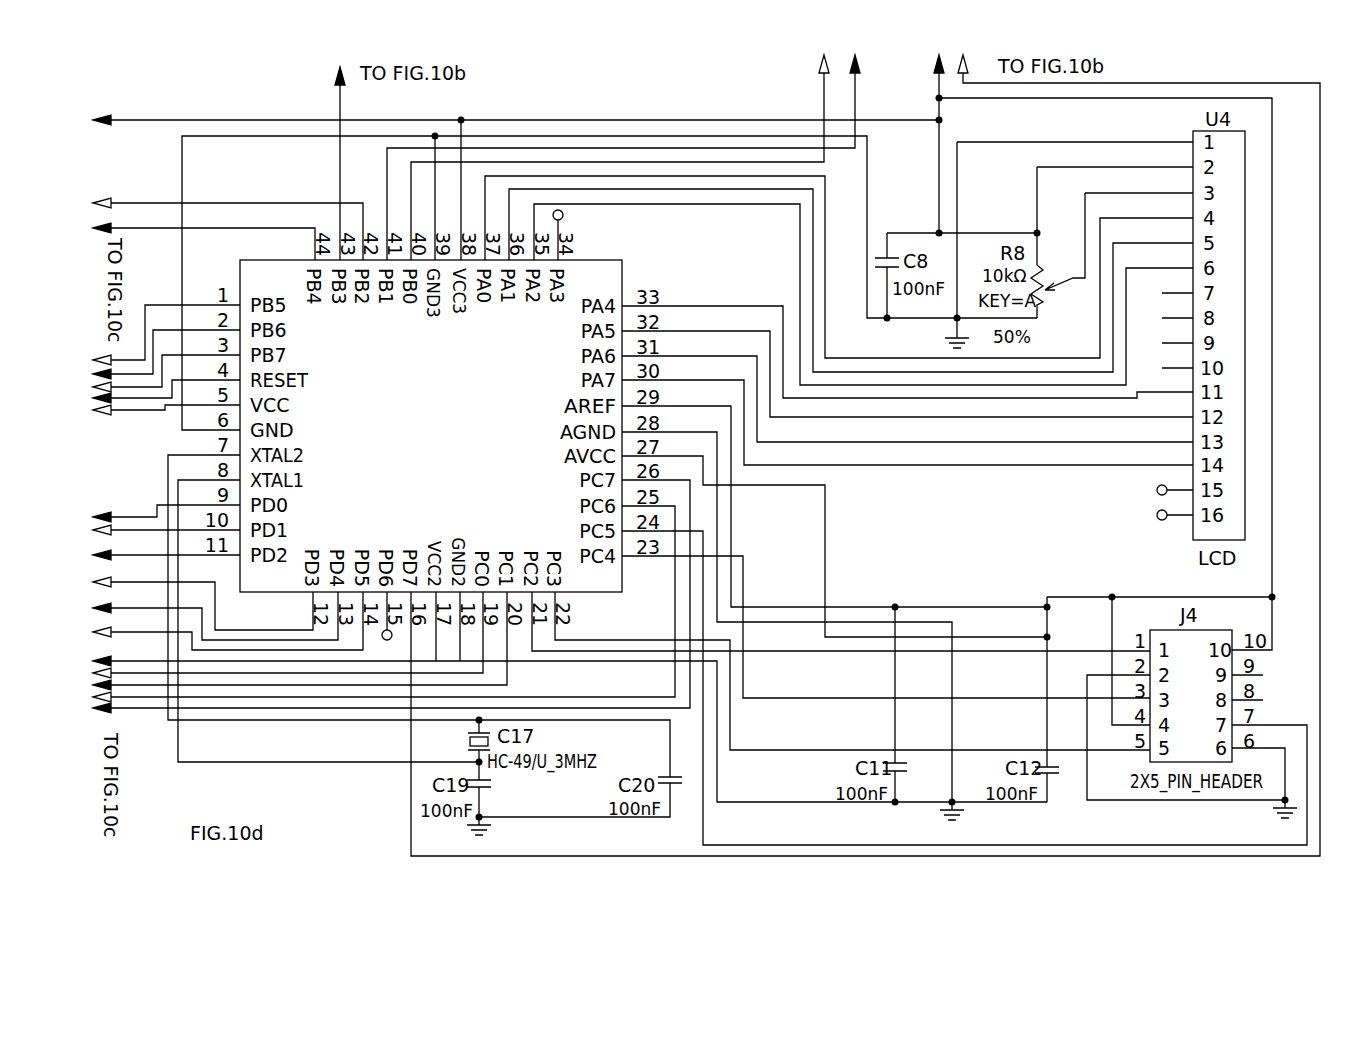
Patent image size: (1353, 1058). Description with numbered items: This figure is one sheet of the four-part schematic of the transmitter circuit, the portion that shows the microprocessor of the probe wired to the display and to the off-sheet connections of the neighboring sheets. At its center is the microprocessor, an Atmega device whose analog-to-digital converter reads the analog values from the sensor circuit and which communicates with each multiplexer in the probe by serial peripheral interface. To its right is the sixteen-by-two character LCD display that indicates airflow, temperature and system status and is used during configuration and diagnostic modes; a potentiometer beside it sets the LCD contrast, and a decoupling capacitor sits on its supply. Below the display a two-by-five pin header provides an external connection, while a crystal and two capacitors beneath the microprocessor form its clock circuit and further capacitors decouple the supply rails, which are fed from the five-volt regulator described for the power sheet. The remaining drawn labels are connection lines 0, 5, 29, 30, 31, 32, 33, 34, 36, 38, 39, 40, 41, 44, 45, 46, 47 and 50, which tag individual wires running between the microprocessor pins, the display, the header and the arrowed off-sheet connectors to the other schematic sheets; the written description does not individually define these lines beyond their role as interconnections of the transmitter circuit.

The signal line 0 is at (609, 469).
The supply voltage line 5 is at (932, 146).
The signal line 29 is at (163, 608).
The signal line 30 is at (163, 634).
The signal line 31 is at (633, 651).
The signal line 32 is at (852, 671).
The signal line 33 is at (886, 627).
The signal line 34 is at (787, 178).
The signal line 36 is at (964, 688).
The supply line 38 is at (853, 455).
The signal line 39 is at (329, 163).
The signal line 40 is at (743, 192).
The signal line 41 is at (688, 207).
The signal line 44 is at (907, 341).
The signal line 45 is at (620, 157).
The signal line 46 is at (907, 363).
The signal line 47 is at (182, 586).
The signal line 50 is at (907, 388).